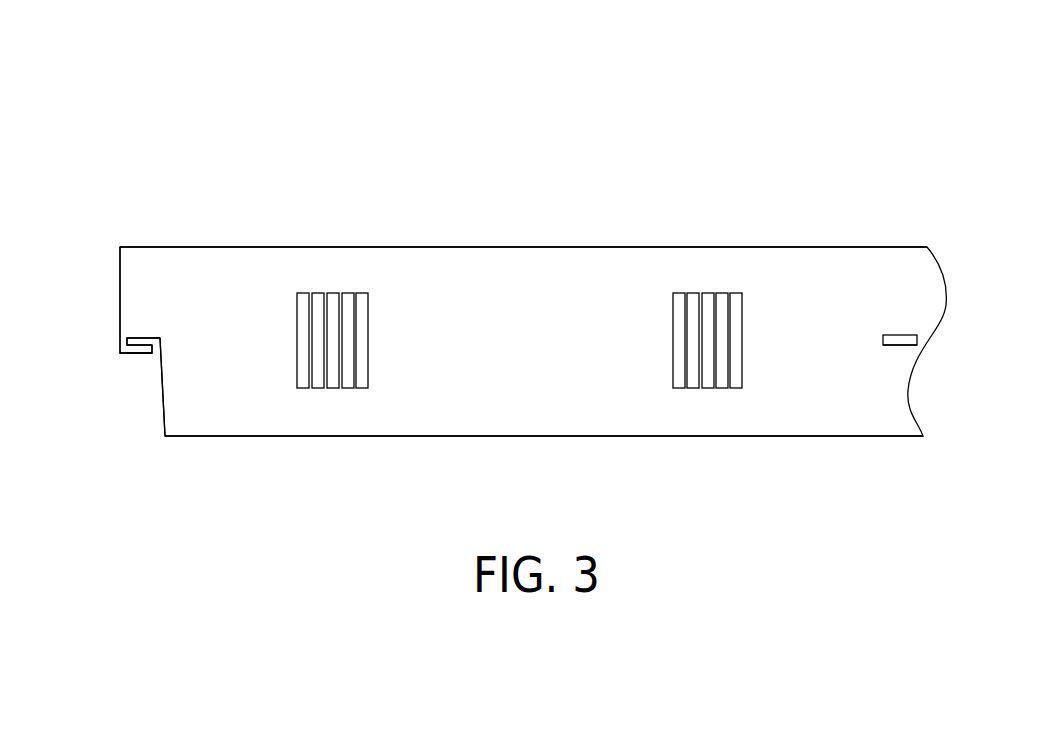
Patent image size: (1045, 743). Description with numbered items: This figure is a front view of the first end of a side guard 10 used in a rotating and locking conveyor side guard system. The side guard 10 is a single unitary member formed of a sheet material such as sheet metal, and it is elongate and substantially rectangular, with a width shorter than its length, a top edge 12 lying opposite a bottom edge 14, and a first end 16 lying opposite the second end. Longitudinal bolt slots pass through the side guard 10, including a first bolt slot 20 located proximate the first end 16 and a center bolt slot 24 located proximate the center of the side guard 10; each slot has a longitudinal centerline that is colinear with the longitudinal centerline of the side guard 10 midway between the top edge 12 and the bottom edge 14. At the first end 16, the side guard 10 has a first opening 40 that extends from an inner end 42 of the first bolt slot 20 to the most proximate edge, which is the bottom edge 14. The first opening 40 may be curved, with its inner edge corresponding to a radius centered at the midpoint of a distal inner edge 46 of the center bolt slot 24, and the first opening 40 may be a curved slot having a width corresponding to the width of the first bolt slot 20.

The side guard 10 is at (522, 104).
The top edge 12 is at (663, 247).
The bottom edge 14 is at (625, 436).
The first end 16 is at (120, 325).
The first bolt slot 20 is at (145, 322).
The center bolt slot 24 is at (903, 318).
The first opening 40 is at (155, 358).
The inner end 42 is at (160, 338).
The distal inner edge 46 is at (900, 347).